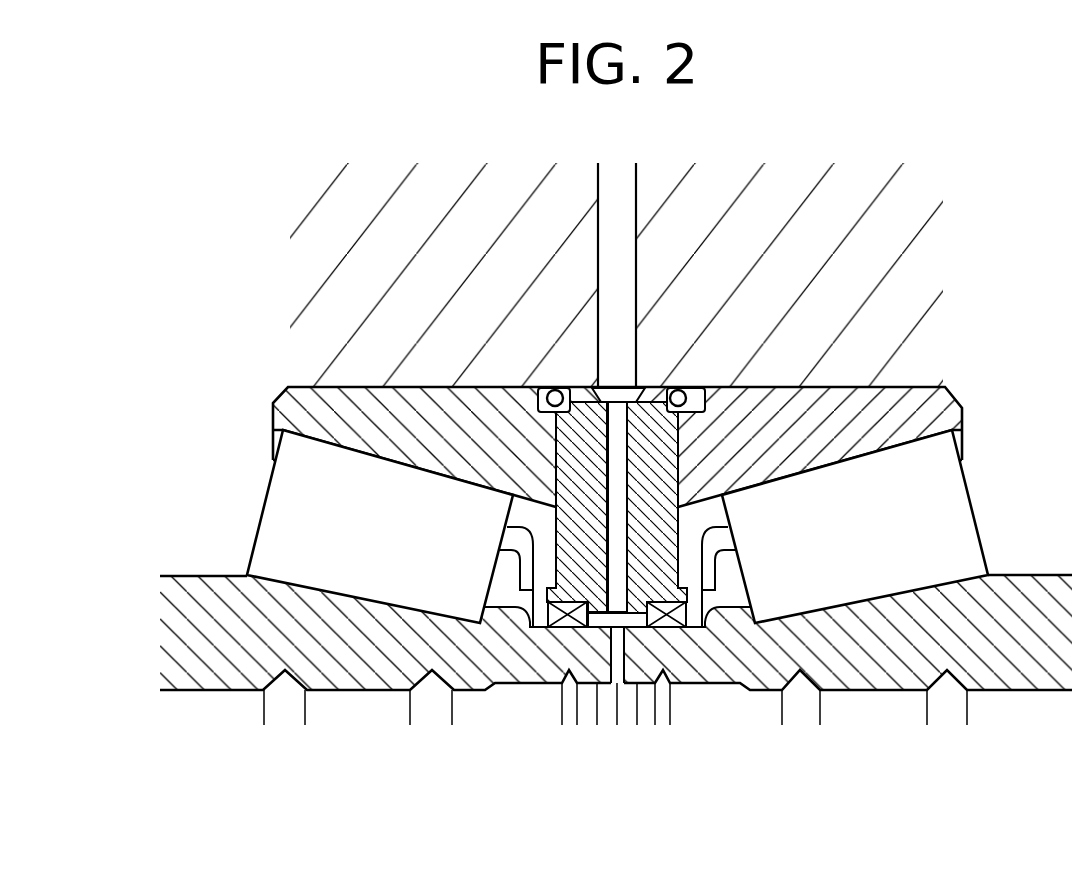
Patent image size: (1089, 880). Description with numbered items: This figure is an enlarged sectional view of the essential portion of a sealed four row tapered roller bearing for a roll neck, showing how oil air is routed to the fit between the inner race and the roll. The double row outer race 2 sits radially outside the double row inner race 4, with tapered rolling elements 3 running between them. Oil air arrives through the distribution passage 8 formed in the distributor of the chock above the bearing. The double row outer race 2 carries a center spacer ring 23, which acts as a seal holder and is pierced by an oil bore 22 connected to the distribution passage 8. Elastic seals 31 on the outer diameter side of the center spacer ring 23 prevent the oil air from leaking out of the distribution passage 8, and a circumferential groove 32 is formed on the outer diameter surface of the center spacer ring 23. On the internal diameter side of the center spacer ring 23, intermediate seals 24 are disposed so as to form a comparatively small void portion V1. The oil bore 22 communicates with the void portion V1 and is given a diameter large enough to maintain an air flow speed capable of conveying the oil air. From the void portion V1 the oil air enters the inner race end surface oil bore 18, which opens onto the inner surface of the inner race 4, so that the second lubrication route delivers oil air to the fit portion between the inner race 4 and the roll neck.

The double row outer race 2 is at (830, 410).
The rolling element 3 is at (942, 512).
The double row inner race 4 is at (873, 676).
The distribution passage 8 is at (637, 252).
The inner race end surface oil bore 18 is at (611, 660).
The oil bore 22 is at (590, 387).
The center spacer ring 23 is at (704, 412).
The intermediate seal 24 is at (567, 627).
The elastic seal 31 is at (549, 391).
The circumferential groove 32 is at (611, 387).
The void portion V1 is at (612, 632).